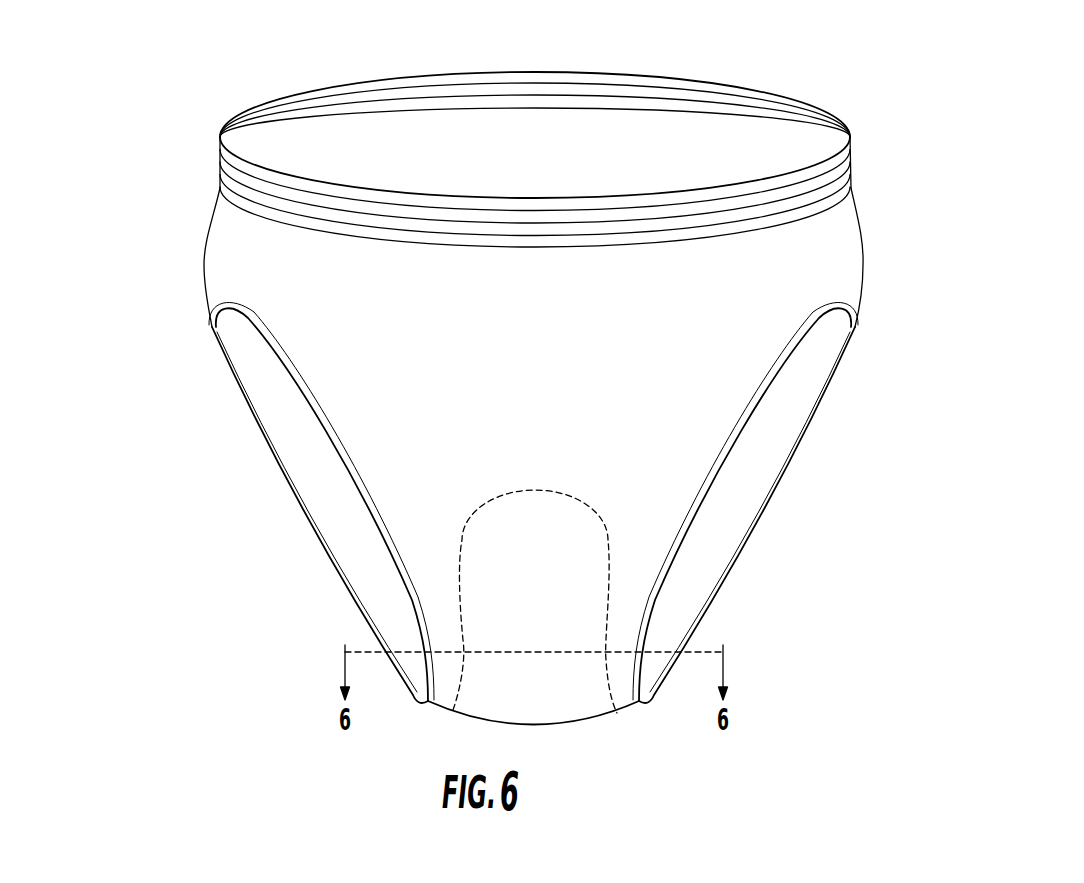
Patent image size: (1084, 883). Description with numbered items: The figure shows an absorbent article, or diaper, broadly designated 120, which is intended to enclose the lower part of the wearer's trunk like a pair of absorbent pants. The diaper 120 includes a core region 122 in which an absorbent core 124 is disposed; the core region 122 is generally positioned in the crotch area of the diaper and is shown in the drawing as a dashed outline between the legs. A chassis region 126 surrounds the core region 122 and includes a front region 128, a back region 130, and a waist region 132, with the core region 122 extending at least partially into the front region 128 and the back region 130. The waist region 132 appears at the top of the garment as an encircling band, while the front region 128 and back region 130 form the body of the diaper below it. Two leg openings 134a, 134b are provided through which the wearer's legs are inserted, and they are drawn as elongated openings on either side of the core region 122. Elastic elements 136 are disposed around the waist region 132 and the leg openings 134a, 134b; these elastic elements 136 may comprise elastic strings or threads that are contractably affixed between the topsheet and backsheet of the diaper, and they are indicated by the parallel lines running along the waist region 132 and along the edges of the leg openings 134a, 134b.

The absorbent article 120 is at (102, 116).
The core region 122 is at (413, 533).
The absorbent core 124 is at (553, 702).
The chassis region 126 is at (823, 285).
The front region 128 is at (300, 231).
The back region 130 is at (448, 144).
The waist region 132 is at (495, 95).
The leg opening 134a is at (757, 470).
The leg opening 134b is at (317, 488).
The elastic elements 136 is at (584, 90).